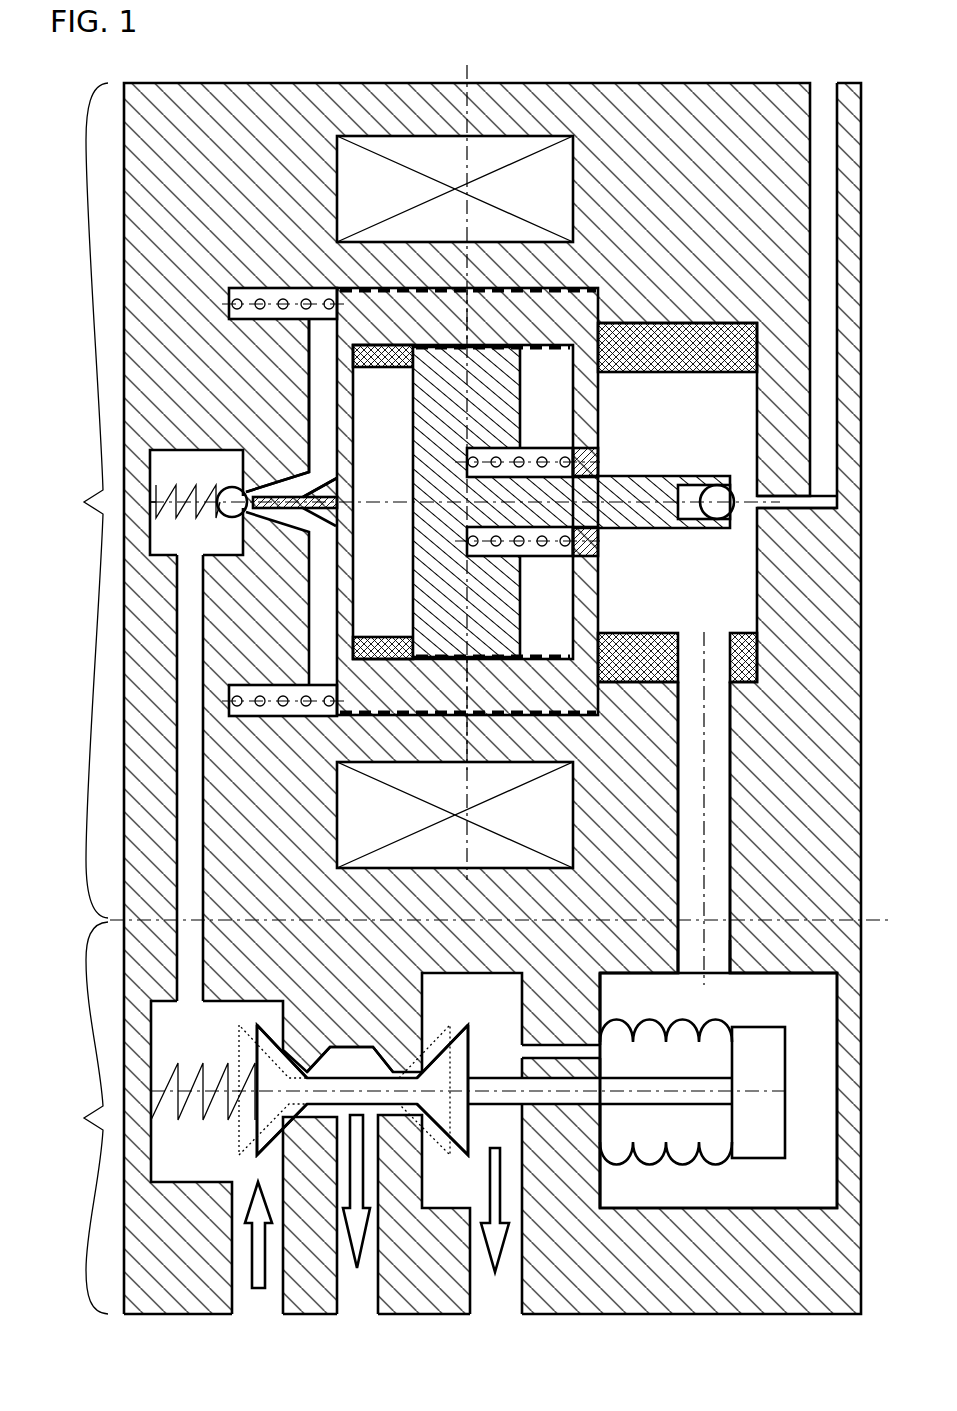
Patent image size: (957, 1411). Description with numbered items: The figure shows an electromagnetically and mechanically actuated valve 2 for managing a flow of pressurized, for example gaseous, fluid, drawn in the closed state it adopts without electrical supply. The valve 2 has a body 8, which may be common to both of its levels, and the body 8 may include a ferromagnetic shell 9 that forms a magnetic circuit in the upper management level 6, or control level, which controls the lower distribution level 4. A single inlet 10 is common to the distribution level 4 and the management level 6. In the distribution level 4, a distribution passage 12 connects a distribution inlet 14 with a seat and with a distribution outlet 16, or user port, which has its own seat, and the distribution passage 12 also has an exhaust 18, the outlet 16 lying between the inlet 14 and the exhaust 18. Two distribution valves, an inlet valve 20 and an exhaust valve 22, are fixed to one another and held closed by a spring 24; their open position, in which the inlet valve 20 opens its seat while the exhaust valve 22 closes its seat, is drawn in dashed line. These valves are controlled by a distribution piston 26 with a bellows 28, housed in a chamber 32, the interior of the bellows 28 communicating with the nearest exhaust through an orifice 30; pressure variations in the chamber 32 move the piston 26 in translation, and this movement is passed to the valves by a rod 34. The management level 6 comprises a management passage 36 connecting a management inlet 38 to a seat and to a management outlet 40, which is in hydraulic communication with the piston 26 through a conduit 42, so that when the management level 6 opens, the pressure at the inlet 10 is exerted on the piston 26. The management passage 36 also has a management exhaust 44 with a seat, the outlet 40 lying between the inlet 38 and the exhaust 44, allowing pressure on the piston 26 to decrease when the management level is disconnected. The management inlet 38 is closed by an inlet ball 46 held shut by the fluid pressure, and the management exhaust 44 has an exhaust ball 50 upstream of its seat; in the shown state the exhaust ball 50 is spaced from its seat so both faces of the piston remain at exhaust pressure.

The valve 2 is at (500, 659).
The distribution level 4 is at (86, 1118).
The management level 6 is at (82, 500).
The body 8 is at (245, 132).
The ferromagnetic shell 9 is at (641, 281).
The inlet 10 is at (245, 1315).
The distribution passage 12 is at (338, 1070).
The distribution inlet 14 is at (290, 1062).
The distribution outlet 16 is at (344, 1315).
The exhaust 18 is at (480, 1315).
The inlet valve 20 is at (259, 1118).
The exhaust valve 22 is at (434, 1123).
The spring 24 is at (193, 1092).
The distribution piston 26 is at (744, 1140).
The bellows 28 is at (725, 1165).
The orifice 30 is at (535, 1048).
The chamber 32 is at (792, 1013).
The rod 34 is at (565, 1095).
The management passage 36 is at (307, 603).
The management inlet 38 is at (290, 472).
The management outlet 40 is at (714, 717).
The conduit 42 is at (680, 970).
The management exhaust 44 is at (760, 506).
The inlet ball 46 is at (232, 510).
The exhaust ball 50 is at (717, 486).